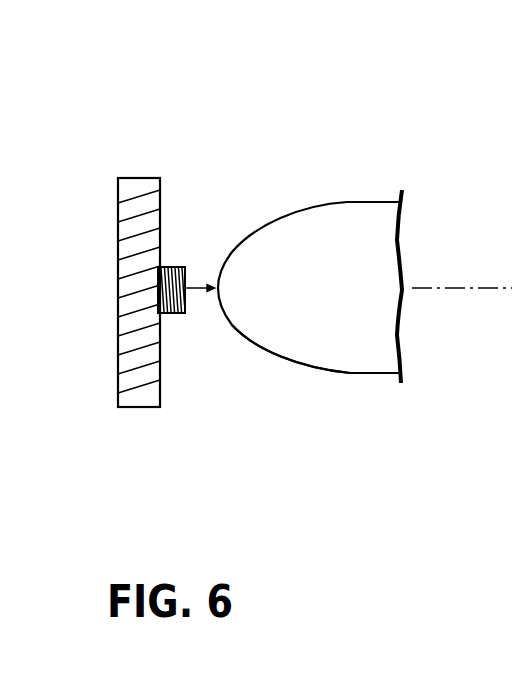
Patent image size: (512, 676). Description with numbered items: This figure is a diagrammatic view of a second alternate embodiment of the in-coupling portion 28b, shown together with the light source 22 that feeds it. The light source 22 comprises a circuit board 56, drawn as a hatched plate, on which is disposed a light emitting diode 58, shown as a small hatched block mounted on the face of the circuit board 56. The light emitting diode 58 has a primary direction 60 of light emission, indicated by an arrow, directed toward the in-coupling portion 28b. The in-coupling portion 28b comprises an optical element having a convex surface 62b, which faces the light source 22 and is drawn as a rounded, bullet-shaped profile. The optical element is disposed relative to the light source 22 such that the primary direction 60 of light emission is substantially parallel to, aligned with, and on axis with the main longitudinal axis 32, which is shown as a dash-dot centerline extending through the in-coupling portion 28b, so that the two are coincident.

The light source 22 is at (222, 139).
The circuit board 56 is at (134, 190).
The light emitting diode 58 is at (172, 264).
The primary direction of light emission 60 is at (202, 288).
The in-coupling portion 28b is at (345, 186).
The convex surface 62b is at (265, 352).
The main longitudinal axis 32 is at (461, 288).